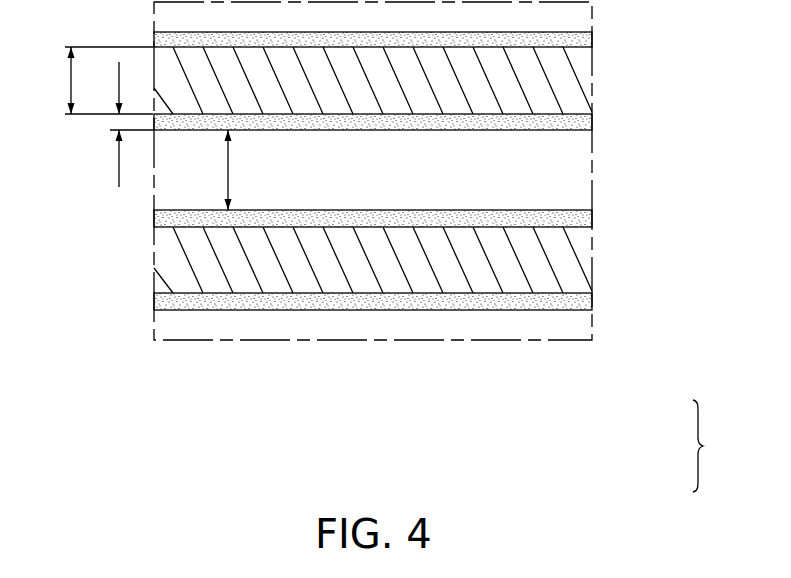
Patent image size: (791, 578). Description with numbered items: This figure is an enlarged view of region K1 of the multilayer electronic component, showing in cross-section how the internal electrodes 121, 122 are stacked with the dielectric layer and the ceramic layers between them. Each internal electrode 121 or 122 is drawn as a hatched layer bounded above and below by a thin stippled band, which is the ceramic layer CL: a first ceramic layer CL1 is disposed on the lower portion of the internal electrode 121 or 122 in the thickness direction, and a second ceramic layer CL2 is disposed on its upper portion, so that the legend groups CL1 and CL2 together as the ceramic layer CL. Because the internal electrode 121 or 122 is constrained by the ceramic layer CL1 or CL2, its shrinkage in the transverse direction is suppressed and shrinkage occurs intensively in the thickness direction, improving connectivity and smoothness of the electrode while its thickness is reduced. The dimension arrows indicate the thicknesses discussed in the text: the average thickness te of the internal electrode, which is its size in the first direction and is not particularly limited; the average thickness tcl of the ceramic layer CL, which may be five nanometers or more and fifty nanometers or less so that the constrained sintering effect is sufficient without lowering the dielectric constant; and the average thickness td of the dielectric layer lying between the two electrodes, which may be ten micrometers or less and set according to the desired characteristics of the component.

The internal electrode 121 is at (592, 250).
The internal electrode 122 is at (418, 83).
The first ceramic layer CL1 is at (592, 118).
The second ceramic layer CL2 is at (592, 37).
The ceramic layer CL is at (688, 446).
The region K1 is at (392, 407).
The average thickness of the internal electrode te is at (97, 80).
The average thickness of the ceramic layer tcl is at (117, 124).
The average thickness of the dielectric layer td is at (213, 170).